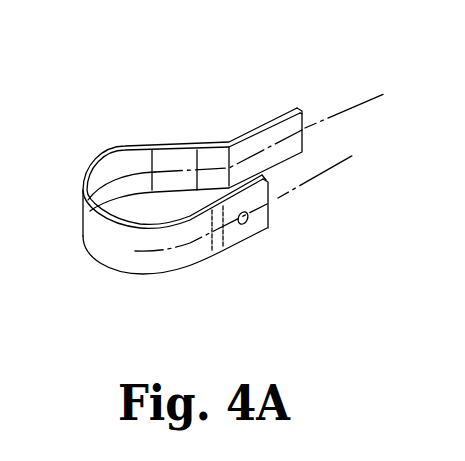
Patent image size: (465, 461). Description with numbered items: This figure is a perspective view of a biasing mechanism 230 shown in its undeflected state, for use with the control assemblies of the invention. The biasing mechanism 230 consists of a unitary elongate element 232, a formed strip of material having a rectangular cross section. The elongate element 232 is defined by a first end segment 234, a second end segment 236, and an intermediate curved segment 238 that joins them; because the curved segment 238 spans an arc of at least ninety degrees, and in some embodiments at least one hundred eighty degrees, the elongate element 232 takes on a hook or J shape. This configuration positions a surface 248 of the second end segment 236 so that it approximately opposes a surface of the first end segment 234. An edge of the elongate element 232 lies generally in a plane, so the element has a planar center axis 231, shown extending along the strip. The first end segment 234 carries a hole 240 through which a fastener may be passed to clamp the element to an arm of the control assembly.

The biasing mechanism 230 is at (227, 173).
The center axis 231 is at (370, 98).
The elongate element 232 is at (106, 151).
The first end segment 234 is at (270, 188).
The second end segment 236 is at (297, 118).
The intermediate curved segment 238 is at (133, 229).
The hole 240 is at (247, 223).
The surface 248 is at (260, 142).